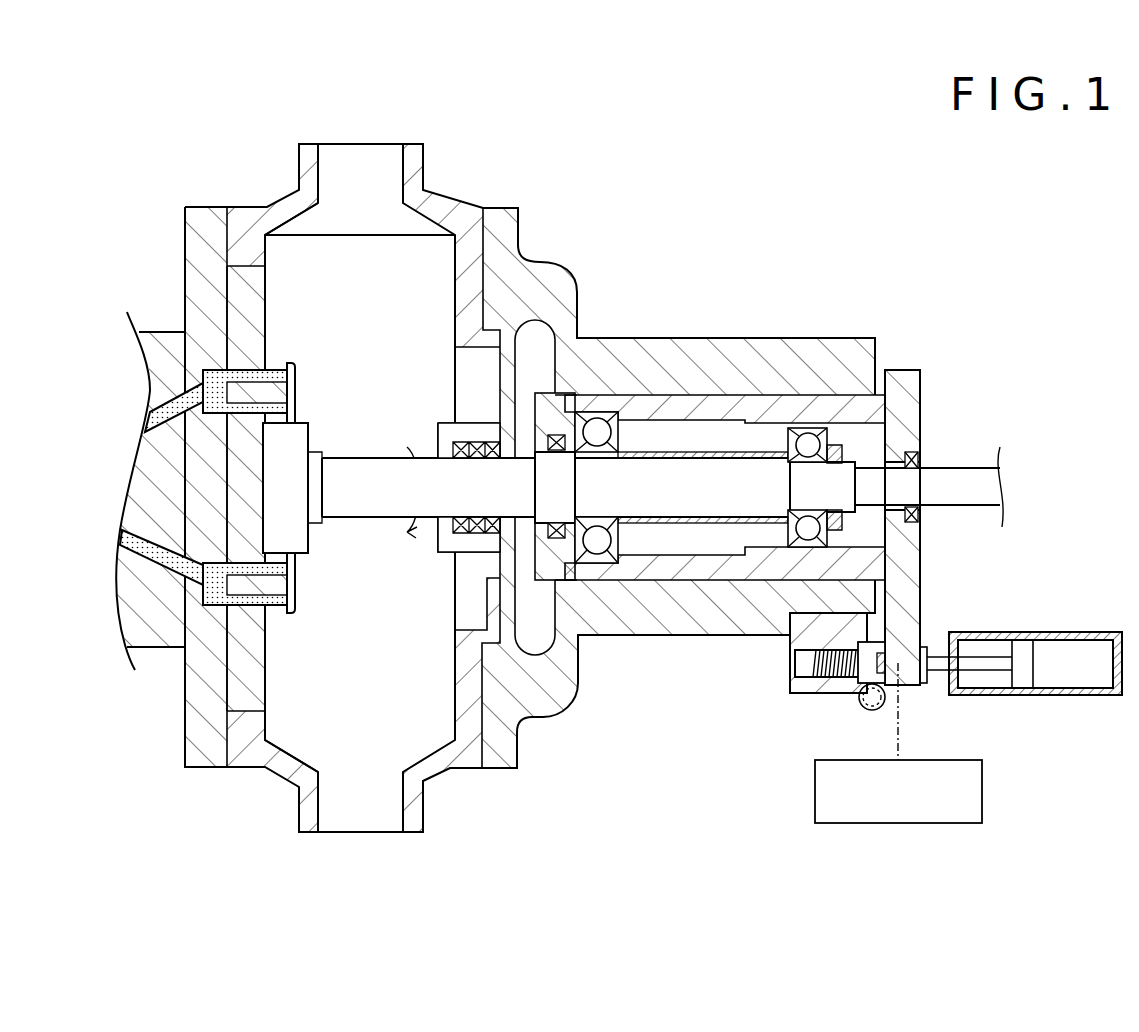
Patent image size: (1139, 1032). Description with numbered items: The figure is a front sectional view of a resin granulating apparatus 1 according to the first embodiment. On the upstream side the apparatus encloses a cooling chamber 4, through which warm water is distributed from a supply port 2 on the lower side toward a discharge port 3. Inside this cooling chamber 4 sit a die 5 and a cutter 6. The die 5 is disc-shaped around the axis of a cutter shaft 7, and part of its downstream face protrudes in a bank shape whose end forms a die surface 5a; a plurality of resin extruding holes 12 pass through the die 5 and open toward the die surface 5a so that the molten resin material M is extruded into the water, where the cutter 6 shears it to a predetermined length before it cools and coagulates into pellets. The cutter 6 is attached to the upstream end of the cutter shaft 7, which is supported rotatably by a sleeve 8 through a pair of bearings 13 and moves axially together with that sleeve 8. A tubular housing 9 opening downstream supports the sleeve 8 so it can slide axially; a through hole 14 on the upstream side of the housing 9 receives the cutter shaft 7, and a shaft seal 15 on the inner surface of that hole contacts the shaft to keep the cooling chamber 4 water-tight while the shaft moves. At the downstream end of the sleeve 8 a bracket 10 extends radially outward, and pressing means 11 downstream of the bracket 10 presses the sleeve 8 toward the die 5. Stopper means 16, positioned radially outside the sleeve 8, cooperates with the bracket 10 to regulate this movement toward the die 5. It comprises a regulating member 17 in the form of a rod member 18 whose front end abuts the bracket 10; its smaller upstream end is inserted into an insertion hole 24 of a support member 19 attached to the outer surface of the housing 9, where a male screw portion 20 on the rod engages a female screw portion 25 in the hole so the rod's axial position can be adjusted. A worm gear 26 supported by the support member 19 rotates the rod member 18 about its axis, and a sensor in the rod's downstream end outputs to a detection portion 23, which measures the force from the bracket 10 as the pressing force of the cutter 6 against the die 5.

The resin granulating apparatus 1 is at (701, 232).
The supply port 2 is at (402, 800).
The discharge port 3 is at (403, 183).
The cooling chamber 4 is at (366, 318).
The die 5 is at (255, 675).
The die surface 5a is at (295, 387).
The cutter 6 is at (298, 586).
The cutter shaft 7 is at (428, 470).
The sleeve 8 is at (712, 405).
The housing 9 is at (663, 377).
The bracket 10 is at (906, 380).
The pressing means 11 is at (1083, 696).
The resin extruding holes 12 is at (295, 409).
The bearings 13 is at (600, 412).
The through hole 14 is at (412, 526).
The shaft seal 15 is at (450, 552).
The stopper means 16 is at (801, 703).
The regulating member 17 is at (771, 653).
The rod member 18 is at (790, 660).
The support member 19 is at (802, 693).
The male screw portion 20 is at (837, 693).
The detection portion 23 is at (982, 793).
The insertion hole 24 is at (792, 682).
The female screw portion 25 is at (795, 655).
The worm gear 26 is at (867, 710).
The molten resin material M is at (147, 422).